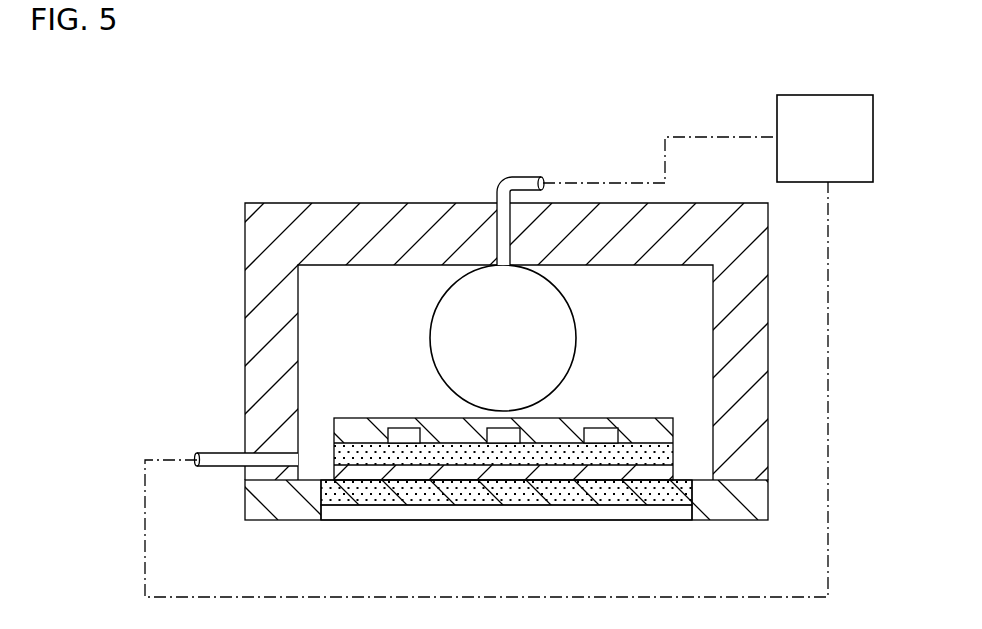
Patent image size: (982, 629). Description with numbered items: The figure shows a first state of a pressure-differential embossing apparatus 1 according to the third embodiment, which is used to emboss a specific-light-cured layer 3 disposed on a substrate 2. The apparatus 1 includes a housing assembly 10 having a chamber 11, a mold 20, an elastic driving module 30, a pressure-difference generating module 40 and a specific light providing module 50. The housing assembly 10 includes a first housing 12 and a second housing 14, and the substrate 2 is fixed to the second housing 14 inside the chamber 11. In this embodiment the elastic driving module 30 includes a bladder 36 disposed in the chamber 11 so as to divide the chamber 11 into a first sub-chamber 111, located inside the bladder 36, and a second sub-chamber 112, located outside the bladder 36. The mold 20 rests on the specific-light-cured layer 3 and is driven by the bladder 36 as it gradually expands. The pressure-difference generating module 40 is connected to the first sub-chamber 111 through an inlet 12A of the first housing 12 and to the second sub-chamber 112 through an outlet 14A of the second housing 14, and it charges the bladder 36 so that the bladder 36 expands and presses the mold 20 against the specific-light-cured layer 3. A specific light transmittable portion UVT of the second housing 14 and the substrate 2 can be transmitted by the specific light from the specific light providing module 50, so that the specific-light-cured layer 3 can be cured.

The pressure-differential embossing apparatus 1 is at (303, 197).
The housing assembly 10 is at (212, 30).
The chamber 11 is at (374, 30).
The first housing 12 is at (252, 253).
The inlet 12A is at (534, 176).
The second housing 14 is at (266, 565).
The outlet 14A is at (203, 455).
The first sub-chamber 111 is at (473, 300).
The second sub-chamber 112 is at (160, 325).
The mold 20 is at (501, 413).
The substrate 2 is at (645, 440).
The specific-light-cured layer 3 is at (375, 423).
The elastic driving module 30 is at (465, 218).
The bladder 36 is at (434, 310).
The pressure-difference generating module 40 is at (822, 105).
The specific light providing module 50 is at (432, 513).
The specific light transmittable portion UVT is at (565, 502).